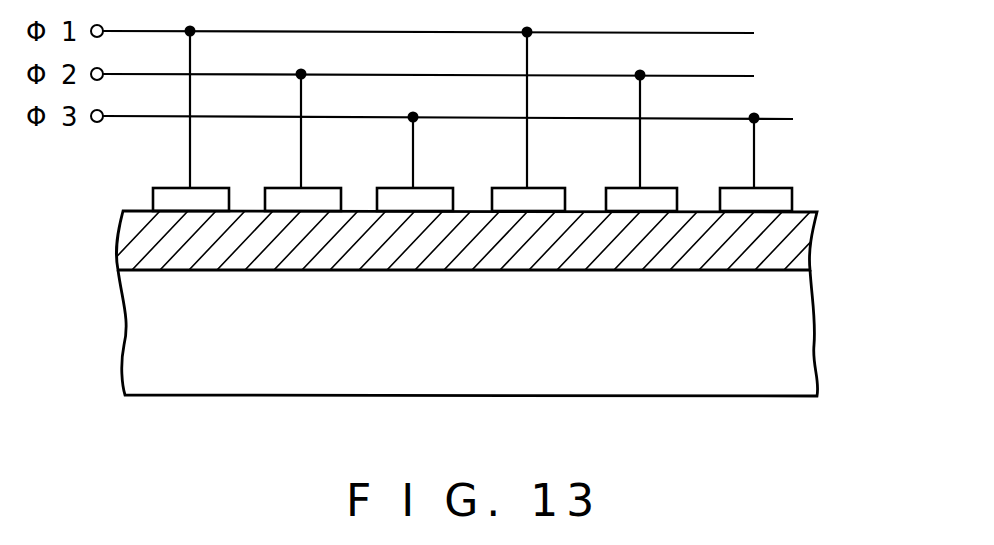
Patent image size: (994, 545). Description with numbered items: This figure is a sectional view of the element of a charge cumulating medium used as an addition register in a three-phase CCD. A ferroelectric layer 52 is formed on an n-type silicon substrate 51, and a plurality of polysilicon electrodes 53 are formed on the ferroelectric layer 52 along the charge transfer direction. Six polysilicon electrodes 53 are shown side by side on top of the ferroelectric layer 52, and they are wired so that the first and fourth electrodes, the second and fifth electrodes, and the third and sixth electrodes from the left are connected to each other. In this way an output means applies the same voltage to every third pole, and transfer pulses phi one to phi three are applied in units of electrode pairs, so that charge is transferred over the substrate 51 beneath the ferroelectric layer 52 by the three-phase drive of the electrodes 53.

The n-type silicon substrate 51 is at (806, 332).
The ferroelectric layer 52 is at (808, 240).
The polysilicon electrodes 53 is at (794, 192).